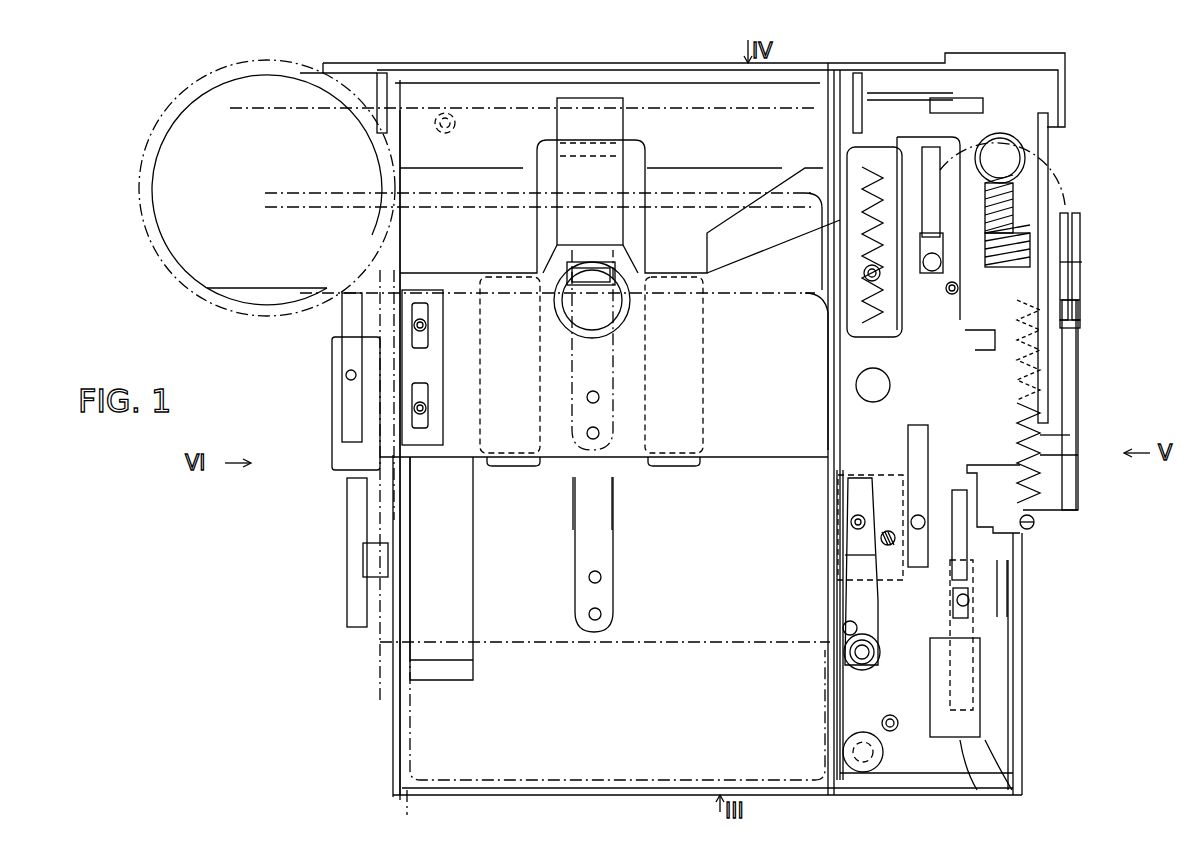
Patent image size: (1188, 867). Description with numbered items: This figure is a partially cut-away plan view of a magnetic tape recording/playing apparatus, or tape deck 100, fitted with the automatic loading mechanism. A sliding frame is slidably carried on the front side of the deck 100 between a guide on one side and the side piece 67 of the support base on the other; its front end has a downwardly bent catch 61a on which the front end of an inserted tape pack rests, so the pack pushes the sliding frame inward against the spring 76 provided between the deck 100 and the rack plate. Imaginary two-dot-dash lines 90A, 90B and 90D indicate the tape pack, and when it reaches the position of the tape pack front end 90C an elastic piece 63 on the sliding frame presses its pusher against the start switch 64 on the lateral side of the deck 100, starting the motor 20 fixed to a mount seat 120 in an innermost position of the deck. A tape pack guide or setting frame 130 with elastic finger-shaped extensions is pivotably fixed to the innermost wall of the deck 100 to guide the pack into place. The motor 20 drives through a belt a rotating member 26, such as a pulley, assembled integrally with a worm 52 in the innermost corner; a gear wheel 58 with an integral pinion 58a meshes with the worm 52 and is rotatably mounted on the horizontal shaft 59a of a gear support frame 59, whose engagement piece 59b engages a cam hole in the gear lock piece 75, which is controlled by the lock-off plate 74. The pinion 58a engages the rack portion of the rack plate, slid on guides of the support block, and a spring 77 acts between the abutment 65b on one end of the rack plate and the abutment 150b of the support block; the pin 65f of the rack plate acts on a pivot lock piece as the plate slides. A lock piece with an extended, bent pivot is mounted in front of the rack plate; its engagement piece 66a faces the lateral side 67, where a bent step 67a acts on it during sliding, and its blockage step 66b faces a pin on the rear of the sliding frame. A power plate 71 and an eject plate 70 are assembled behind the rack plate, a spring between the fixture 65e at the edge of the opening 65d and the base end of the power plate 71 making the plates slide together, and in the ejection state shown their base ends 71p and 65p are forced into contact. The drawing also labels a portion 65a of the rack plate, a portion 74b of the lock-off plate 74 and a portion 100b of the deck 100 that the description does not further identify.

The tape deck 100 is at (617, 790).
The motor 20 is at (167, 265).
The mount seat 120 is at (165, 149).
The ring 90D is at (378, 110).
The tape pack front end 90C is at (395, 195).
The ring 90B is at (400, 209).
The ring 90A is at (385, 296).
The tape pack guide or setting frame 130 is at (450, 145).
The catch 61a is at (597, 98).
The elastic piece 63 is at (435, 377).
The start switch 64 is at (332, 348).
The spring 76 is at (846, 310).
The worm 52 is at (1000, 148).
The rotating member 26 is at (1045, 118).
The gear wheel 58 is at (1013, 205).
The pinion 58a is at (1030, 250).
The plate 65a is at (1048, 185).
The pin 65f is at (952, 282).
The horizontal shaft 59a is at (1068, 232).
The gear support frame 59 is at (1068, 275).
The engagement piece 59b is at (1080, 300).
The abutment 65b is at (1082, 262).
The opening 65d is at (1060, 320).
The gear lock piece 75 is at (1076, 340).
The spring 77 is at (1040, 415).
The portion 74b is at (1078, 455).
The lock-off plate 74 is at (940, 405).
The abutment 150b is at (1034, 522).
The fixture 65e is at (985, 340).
The bracket 100b is at (838, 478).
The engagement piece 66a is at (851, 522).
The blockage step 66b is at (850, 555).
The bent step 67a is at (845, 628).
The side piece 67 is at (840, 695).
The power plate 71 is at (1010, 680).
The eject plate 70 is at (915, 735).
The base end of power plate 71p is at (970, 780).
The base end of rack plate 65p is at (1012, 780).